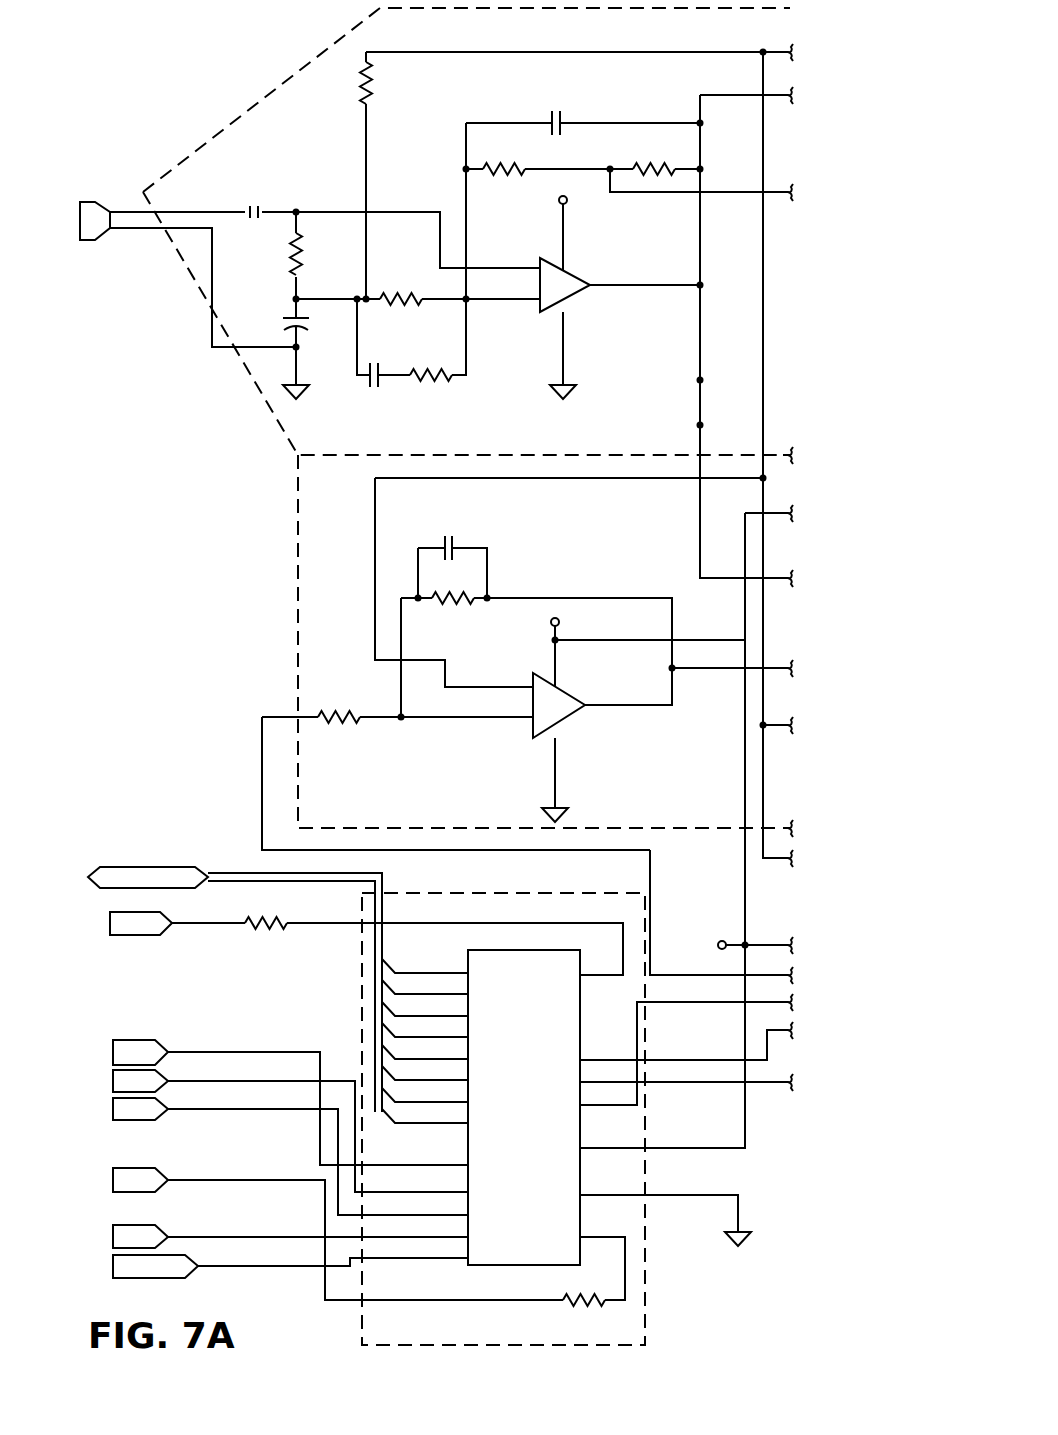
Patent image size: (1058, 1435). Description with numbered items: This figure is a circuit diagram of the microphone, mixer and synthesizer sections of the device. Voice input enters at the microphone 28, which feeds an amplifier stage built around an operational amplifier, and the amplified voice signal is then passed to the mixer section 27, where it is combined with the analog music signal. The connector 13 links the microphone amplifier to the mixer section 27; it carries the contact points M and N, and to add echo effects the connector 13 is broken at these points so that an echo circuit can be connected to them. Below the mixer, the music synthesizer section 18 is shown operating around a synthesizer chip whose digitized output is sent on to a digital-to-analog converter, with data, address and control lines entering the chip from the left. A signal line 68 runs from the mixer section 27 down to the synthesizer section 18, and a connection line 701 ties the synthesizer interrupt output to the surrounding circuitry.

The microphone 28 is at (80, 214).
The connector 13 is at (700, 447).
The mixer section 27 is at (527, 813).
The signal line 68 is at (262, 777).
The connection line 701 is at (648, 913).
The music synthesizer section 18 is at (440, 1106).